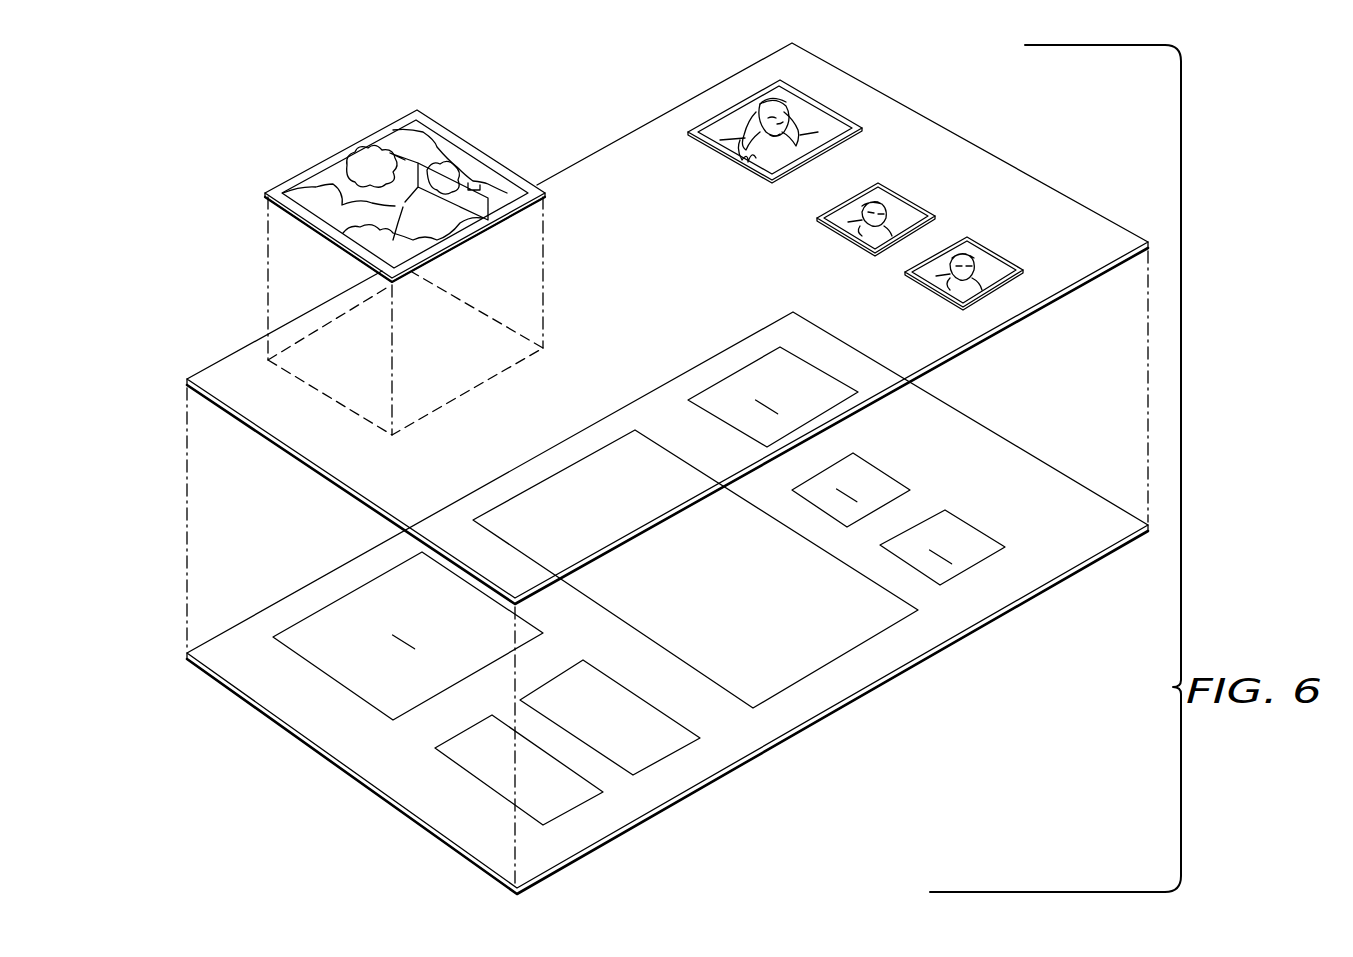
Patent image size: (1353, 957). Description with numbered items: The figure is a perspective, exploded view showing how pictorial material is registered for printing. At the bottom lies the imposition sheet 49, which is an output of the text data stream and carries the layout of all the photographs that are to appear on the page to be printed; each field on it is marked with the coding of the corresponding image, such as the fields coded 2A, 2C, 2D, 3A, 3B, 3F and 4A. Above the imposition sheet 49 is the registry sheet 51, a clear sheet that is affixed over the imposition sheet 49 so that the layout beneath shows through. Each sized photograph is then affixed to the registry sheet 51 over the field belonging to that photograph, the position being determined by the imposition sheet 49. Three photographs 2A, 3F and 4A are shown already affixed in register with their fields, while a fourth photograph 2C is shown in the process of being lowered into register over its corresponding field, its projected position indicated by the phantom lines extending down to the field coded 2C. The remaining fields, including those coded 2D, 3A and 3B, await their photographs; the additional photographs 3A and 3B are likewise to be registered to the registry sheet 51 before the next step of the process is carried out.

The photograph 2A is at (862, 128).
The photograph 2C is at (488, 158).
The image coding 2D is at (700, 560).
The photograph 3A is at (620, 717).
The photograph 3B is at (534, 767).
The photograph 3F is at (935, 216).
The photograph 4A is at (1023, 270).
The imposition sheet 49 is at (990, 623).
The registry sheet 51 is at (1007, 327).